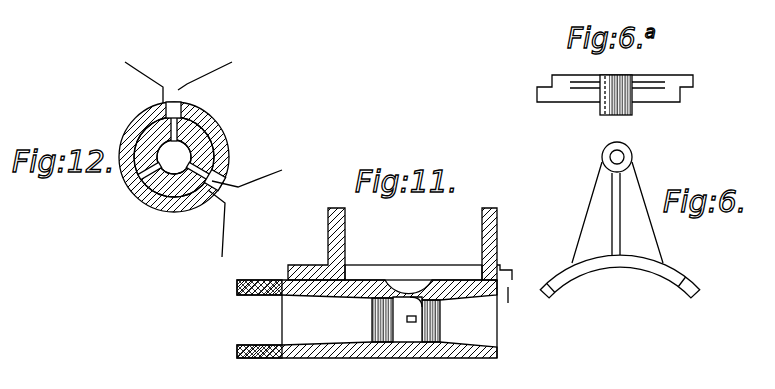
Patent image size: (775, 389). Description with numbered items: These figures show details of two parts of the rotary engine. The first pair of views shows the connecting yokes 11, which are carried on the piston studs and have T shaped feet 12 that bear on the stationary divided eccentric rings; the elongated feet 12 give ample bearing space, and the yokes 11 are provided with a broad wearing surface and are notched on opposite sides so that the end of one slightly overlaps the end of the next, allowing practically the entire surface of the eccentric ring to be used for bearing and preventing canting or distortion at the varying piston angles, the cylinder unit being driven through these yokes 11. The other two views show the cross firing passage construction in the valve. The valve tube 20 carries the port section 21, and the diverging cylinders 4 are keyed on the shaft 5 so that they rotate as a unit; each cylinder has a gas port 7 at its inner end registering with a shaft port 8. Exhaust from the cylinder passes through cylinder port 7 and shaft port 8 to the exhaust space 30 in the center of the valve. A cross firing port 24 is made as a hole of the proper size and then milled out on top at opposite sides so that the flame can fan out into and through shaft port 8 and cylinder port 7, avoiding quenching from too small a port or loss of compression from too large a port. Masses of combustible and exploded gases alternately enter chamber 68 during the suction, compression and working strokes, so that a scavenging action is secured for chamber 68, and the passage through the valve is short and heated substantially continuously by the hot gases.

In FIG. 12, the cylinder 4 is at (137, 70).
In FIG. 11, the cylinder 4 is at (345, 238).
In FIG. 11, the shaft 5 is at (305, 268).
In FIG. 12, the cylinder port 7 is at (185, 90).
In FIG. 12, the shaft port 8 is at (182, 110).
In FIG. 11, the shaft port 8 is at (430, 272).
In FIG. 6A, the yoke 11 is at (643, 98).
In FIG. 6, the yoke 11 is at (642, 232).
In FIG. 6, the T shaped foot 12 is at (603, 265).
In FIG. 11, the valve tube 20 is at (237, 286).
In FIG. 11, the port section 21 is at (415, 345).
In FIG. 12, the cross firing port 24 is at (171, 130).
In FIG. 11, the cross firing port 24 is at (417, 319).
In FIG. 11, the exhaust space 30 is at (485, 326).
In FIG. 12, the chamber 68 is at (174, 157).
In FIG. 11, the chamber 68 is at (402, 328).